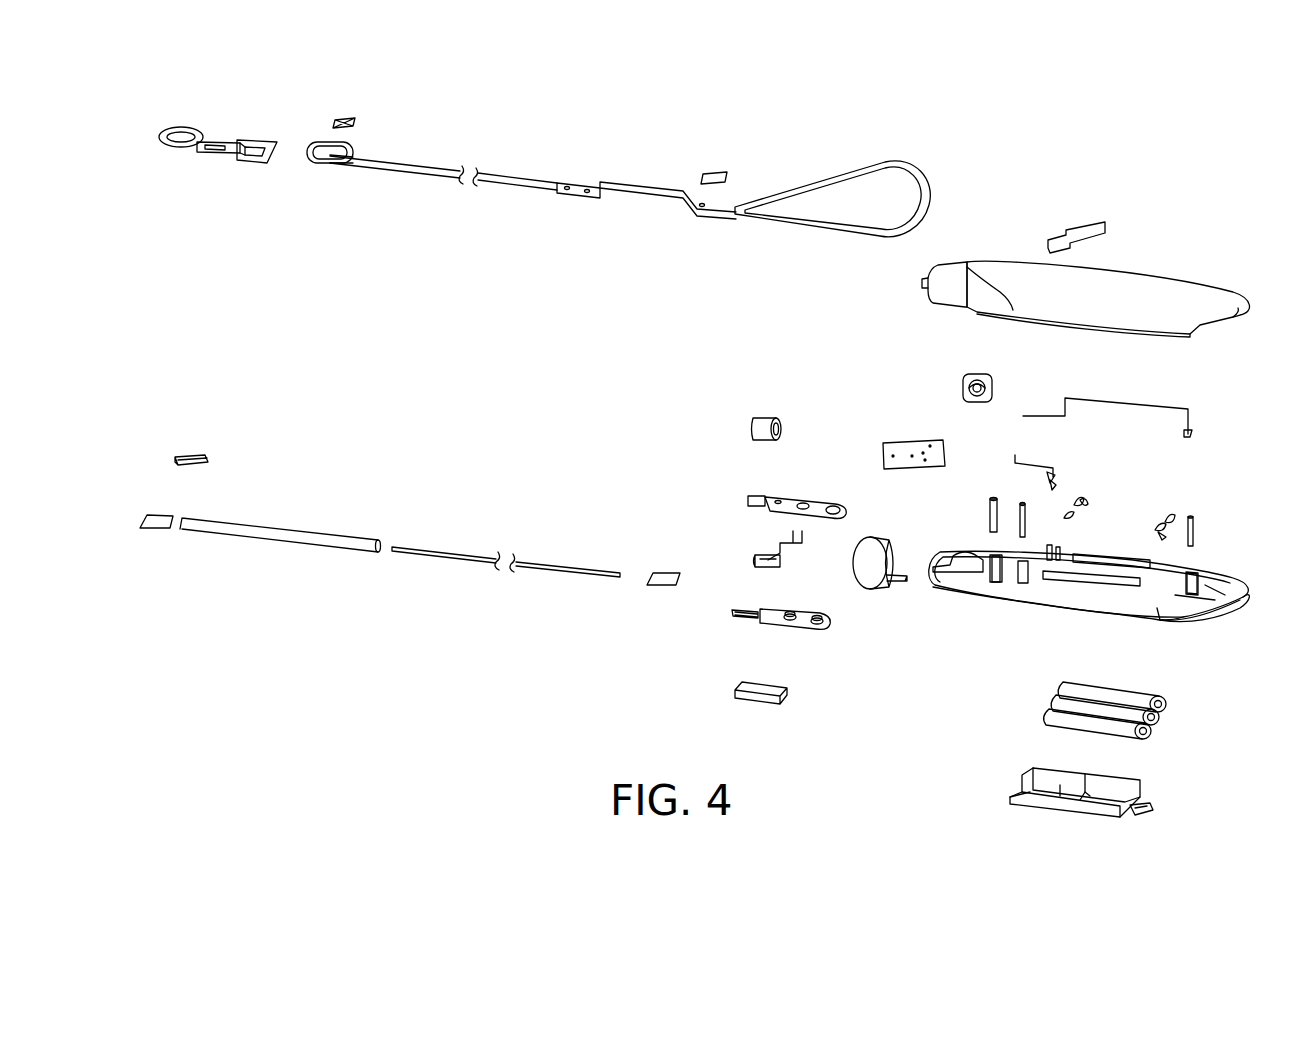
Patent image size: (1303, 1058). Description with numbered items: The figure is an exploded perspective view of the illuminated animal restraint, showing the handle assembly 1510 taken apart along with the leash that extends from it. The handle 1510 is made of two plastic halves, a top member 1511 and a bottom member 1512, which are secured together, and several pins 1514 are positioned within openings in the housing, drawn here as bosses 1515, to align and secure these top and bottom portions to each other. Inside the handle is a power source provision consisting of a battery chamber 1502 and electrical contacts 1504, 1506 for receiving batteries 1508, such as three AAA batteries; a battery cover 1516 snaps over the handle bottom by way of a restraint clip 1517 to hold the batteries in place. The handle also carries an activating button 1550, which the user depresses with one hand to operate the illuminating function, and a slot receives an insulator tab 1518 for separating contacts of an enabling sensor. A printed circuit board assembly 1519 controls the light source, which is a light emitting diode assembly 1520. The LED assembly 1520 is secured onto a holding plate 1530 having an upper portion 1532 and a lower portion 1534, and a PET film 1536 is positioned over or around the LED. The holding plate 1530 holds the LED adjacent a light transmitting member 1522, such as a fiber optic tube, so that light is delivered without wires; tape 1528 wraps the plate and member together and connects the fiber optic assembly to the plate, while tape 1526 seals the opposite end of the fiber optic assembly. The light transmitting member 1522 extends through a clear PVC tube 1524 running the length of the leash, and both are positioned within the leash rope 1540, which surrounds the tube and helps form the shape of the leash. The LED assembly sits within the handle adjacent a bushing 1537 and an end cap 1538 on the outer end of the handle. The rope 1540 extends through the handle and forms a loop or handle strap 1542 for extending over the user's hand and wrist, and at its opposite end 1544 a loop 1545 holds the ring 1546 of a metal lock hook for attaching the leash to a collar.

The chamber 1502 is at (1087, 610).
The electrical contact 1504 is at (1085, 497).
The electrical contact 1506 is at (1170, 508).
The batteries 1508 is at (1058, 722).
The handle 1510 is at (1147, 213).
The top member 1511 is at (1165, 283).
The bottom member 1512 is at (1177, 617).
The pins 1514 is at (990, 513).
The boss 1515 is at (995, 553).
The battery cover 1516 is at (1063, 812).
The restraint clip 1517 is at (1145, 815).
The insulator tab 1518 is at (1080, 223).
The printed circuit board assembly 1519 is at (905, 445).
The light emitting diode assembly 1520 is at (745, 544).
The light transmitting member 1522 is at (440, 555).
The clear PVC tube 1524 is at (258, 528).
The tape 1526 is at (158, 530).
The tape 1528 is at (658, 585).
The holding plate 1530 is at (737, 495).
The upper portion 1532 is at (795, 497).
The lower portion 1534 is at (760, 625).
The PET film 1536 is at (752, 700).
The bushing 1537 is at (760, 418).
The end cap 1538 is at (870, 590).
The rope 1540 is at (407, 181).
The handle strap 1542 is at (827, 182).
The opposite end 1544 is at (328, 164).
The loop 1545 is at (307, 163).
The ring 1546 is at (253, 140).
The activating button 1550 is at (965, 375).